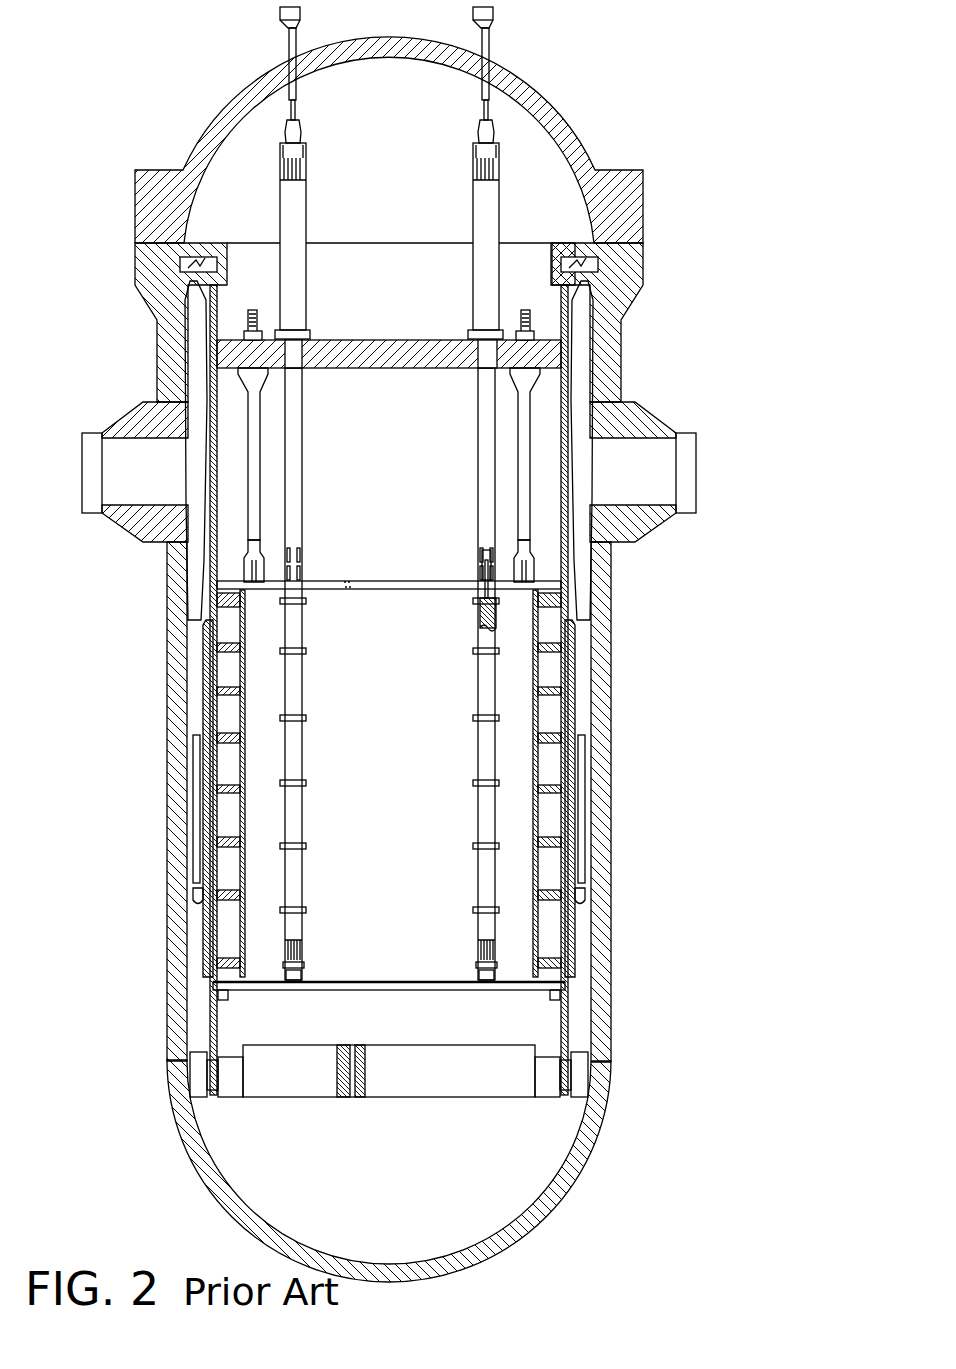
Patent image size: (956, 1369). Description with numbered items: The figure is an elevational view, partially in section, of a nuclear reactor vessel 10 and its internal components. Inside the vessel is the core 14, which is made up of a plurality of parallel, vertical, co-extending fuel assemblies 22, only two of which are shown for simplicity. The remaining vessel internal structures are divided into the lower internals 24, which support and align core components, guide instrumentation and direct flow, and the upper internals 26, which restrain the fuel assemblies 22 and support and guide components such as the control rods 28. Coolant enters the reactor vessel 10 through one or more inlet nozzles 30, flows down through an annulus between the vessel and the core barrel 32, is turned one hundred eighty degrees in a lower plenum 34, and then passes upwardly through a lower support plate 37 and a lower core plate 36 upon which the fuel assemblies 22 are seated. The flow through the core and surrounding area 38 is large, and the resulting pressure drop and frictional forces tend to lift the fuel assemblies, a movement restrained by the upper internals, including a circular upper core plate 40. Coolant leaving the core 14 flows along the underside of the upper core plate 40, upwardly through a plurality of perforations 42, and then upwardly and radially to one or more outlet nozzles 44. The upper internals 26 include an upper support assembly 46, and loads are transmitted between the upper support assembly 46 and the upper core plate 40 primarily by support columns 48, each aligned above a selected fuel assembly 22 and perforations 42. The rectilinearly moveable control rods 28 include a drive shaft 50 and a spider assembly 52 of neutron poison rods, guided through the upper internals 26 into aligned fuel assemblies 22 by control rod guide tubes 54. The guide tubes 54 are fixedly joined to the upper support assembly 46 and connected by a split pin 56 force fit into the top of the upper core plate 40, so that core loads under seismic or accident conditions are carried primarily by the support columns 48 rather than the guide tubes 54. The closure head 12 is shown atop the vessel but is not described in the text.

The reactor vessel 10 is at (614, 655).
The closure head 12 is at (648, 212).
The core 14 is at (410, 783).
The fuel assemblies 22 is at (305, 690).
The lower internals 24 is at (410, 1033).
The upper internals 26 is at (410, 448).
The control rods 28 is at (472, 598).
The inlet nozzles 30 is at (118, 412).
The core barrel 32 is at (213, 580).
The lower plenum 34 is at (556, 1150).
The lower core plate 36 is at (465, 980).
The lower support plate 37 is at (432, 1082).
The surrounding area 38 is at (440, 750).
The upper core plate 40 is at (470, 590).
The perforations 42 is at (348, 580).
The outlet nozzles 44 is at (668, 408).
The upper support assembly 46 is at (560, 243).
The support columns 48 is at (517, 425).
The drive shaft 50 is at (487, 598).
The spider assembly 52 is at (483, 580).
The control rod guide tubes 54 is at (312, 412).
The split pin 56 is at (575, 625).